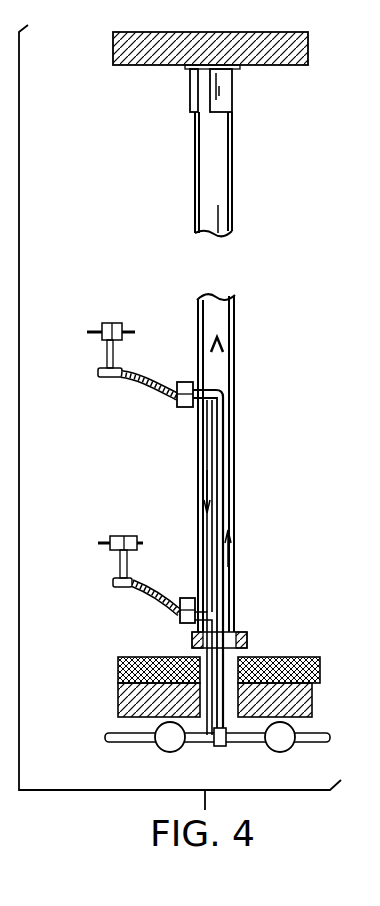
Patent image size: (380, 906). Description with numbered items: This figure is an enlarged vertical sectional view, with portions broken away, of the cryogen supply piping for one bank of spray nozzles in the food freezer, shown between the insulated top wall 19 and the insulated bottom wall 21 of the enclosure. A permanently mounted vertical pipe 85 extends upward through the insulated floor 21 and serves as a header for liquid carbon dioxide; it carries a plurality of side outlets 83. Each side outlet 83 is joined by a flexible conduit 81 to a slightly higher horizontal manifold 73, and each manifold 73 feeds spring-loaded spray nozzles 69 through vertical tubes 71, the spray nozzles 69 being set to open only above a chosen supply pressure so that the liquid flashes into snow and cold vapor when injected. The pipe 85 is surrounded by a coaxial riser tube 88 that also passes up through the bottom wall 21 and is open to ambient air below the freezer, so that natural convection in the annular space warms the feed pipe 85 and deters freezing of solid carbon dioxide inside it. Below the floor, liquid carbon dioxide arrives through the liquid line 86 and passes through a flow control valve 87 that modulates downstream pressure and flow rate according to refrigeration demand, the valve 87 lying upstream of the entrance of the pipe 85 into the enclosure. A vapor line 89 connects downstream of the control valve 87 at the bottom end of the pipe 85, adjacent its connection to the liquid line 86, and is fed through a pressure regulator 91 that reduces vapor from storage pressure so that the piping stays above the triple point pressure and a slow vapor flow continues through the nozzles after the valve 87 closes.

The top wall 19 is at (253, 32).
The bottom wall 21 is at (312, 703).
The spray nozzles 69 is at (91, 452).
The vertical tube 71 is at (103, 353).
The horizontal manifold 73 is at (102, 377).
The flexible conduit 81 is at (150, 380).
The side outlet 83 is at (195, 413).
The vertical pipe 85 is at (226, 450).
The liquid CO2 line 86 is at (317, 745).
The flow control valve 87 is at (280, 753).
The coaxial riser tube 88 is at (235, 322).
The vapor line 89 is at (208, 745).
The pressure regulator 91 is at (155, 750).